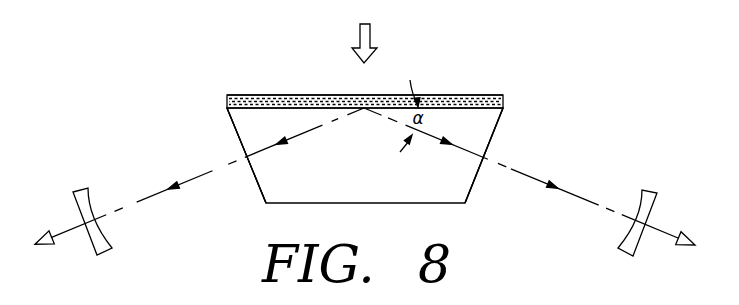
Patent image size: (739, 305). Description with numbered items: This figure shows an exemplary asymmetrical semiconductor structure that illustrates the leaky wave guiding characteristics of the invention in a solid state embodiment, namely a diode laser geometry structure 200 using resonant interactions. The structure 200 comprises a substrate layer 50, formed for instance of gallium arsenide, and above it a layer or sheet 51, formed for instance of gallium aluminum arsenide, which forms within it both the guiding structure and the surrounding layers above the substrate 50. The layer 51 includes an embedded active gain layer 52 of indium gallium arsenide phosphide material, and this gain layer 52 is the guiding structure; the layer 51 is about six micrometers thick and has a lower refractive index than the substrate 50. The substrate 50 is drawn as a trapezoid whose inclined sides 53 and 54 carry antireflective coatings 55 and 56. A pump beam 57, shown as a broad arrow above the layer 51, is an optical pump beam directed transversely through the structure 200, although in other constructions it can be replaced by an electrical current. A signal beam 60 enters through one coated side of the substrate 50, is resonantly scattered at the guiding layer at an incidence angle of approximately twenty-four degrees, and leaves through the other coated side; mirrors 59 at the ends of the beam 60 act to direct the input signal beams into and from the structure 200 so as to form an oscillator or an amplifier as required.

The substrate layer 50 is at (366, 192).
The layer or sheet 51 is at (288, 95).
The embedded active gain layer 52 is at (335, 95).
The side of the substrate 53 is at (232, 121).
The side of the substrate 54 is at (498, 123).
The antireflective coating 55 is at (250, 181).
The antireflective coating 56 is at (478, 185).
The pump beam 57 is at (371, 36).
The mirror 59 is at (637, 249).
The signal beam 60 is at (138, 200).
The diode laser geometry structure 200 is at (240, 89).